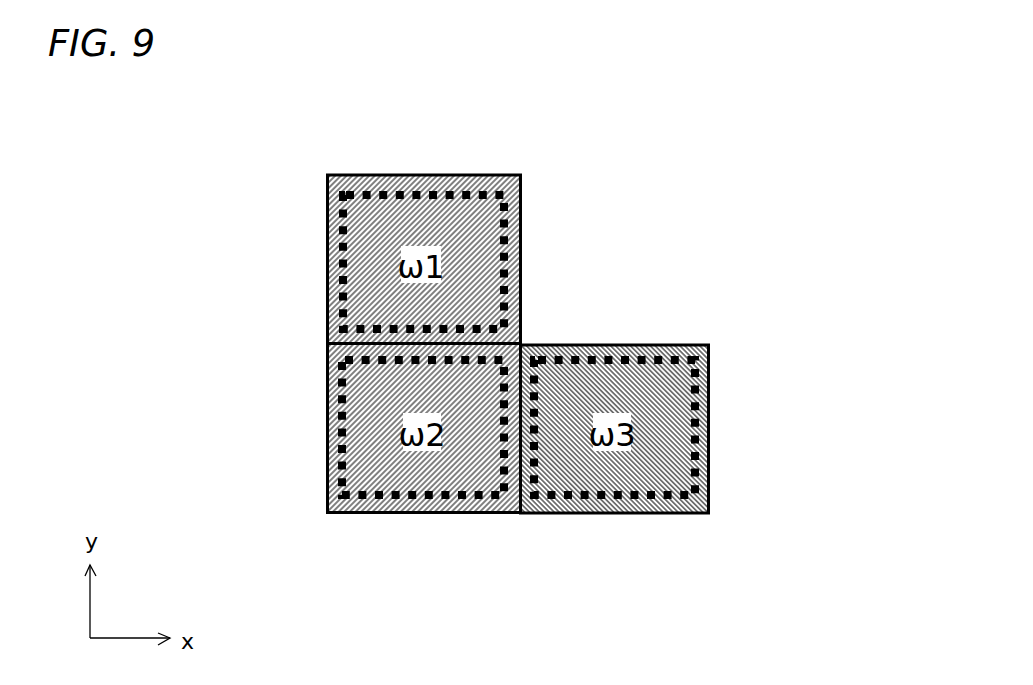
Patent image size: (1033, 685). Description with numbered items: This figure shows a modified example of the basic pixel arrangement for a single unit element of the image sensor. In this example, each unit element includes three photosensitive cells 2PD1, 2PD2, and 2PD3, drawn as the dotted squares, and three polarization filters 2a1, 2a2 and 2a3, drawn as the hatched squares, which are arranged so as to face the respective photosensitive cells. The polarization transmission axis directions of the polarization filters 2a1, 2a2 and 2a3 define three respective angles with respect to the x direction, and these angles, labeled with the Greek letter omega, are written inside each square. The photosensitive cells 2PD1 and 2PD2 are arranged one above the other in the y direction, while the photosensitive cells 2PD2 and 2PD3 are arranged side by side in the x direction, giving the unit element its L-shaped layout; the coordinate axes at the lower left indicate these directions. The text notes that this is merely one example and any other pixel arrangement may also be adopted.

The polarization filter 2a1 is at (319, 232).
The polarization filter 2a2 is at (318, 430).
The polarization filter 2a3 is at (702, 430).
The photosensitive cell 2PD1 is at (428, 185).
The photosensitive cell 2PD2 is at (423, 488).
The photosensitive cell 2PD3 is at (588, 492).